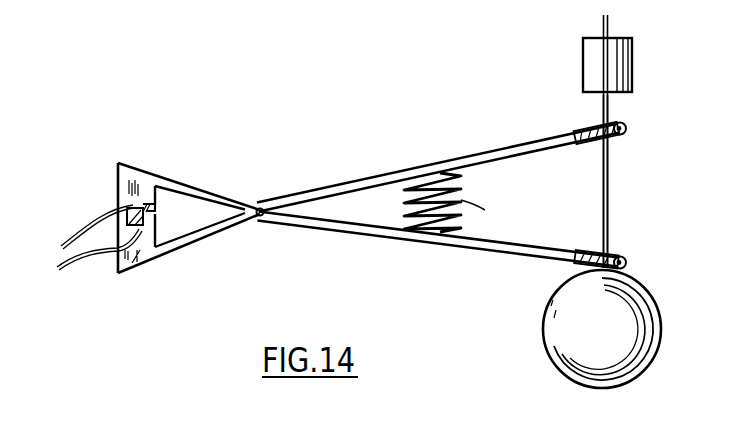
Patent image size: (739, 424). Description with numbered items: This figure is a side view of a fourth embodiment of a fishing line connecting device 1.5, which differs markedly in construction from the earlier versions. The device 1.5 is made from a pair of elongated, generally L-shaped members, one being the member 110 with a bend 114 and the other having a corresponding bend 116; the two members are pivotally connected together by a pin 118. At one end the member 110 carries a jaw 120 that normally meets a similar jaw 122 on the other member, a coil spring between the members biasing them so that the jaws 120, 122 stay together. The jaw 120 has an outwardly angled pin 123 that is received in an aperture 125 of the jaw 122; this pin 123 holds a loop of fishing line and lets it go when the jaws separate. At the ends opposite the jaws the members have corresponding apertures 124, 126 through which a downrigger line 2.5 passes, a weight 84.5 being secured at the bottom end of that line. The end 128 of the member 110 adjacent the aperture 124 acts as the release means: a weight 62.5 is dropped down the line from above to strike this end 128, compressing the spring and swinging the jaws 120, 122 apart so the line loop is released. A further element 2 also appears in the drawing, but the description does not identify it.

The fishing line connecting device 1.5 is at (377, 150).
The lower arm 2 is at (381, 235).
The downrigger line 2.5 is at (609, 22).
The weight 62.5 is at (624, 76).
The weight 84.5 is at (648, 340).
The elongated member 110 is at (404, 176).
The bend 114 is at (259, 207).
The bend 116 is at (261, 217).
The pin 118 is at (264, 208).
The jaw 120 is at (126, 187).
The jaw 122 is at (126, 274).
The outwardly angled pin 123 is at (139, 210).
The aperture 124 is at (603, 143).
The aperture 125 is at (139, 228).
The aperture 126 is at (601, 262).
The end of member 128 is at (627, 127).